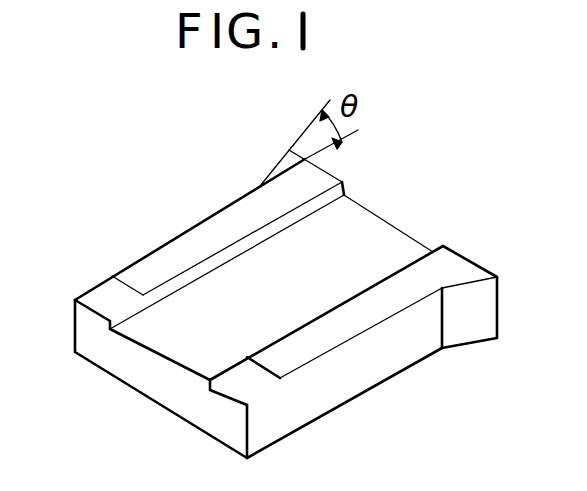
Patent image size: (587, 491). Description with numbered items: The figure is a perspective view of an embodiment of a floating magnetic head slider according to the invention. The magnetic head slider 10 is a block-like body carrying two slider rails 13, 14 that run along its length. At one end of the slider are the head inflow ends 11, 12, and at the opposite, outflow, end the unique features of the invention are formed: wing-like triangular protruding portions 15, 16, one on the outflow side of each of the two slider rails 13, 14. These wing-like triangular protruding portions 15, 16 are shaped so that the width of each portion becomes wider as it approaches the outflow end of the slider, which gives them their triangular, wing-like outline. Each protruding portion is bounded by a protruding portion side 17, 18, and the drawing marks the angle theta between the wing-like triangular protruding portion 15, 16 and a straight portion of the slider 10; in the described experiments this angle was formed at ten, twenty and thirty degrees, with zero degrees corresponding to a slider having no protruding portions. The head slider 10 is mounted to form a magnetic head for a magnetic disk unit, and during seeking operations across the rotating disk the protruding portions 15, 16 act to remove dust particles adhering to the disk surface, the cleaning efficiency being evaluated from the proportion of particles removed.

The magnetic head slider 10 is at (142, 372).
The head inflow end 11 is at (107, 300).
The head inflow end 12 is at (255, 388).
The slider rail 13 is at (158, 263).
The slider rail 14 is at (361, 317).
The wing-like triangular protruding portion 15 is at (289, 150).
The wing-like triangular protruding portion 16 is at (458, 270).
The protruding portion side 17 is at (280, 176).
The protruding portion side 18 is at (473, 280).